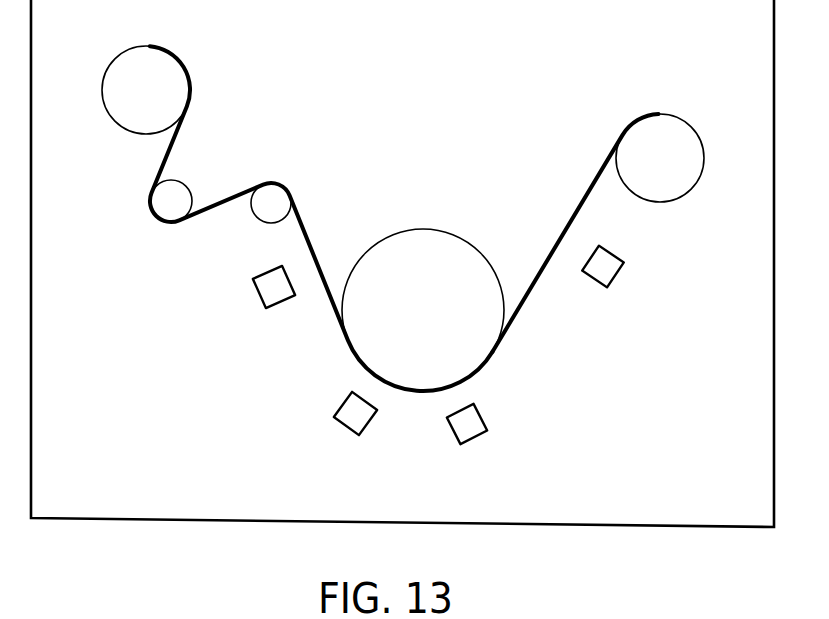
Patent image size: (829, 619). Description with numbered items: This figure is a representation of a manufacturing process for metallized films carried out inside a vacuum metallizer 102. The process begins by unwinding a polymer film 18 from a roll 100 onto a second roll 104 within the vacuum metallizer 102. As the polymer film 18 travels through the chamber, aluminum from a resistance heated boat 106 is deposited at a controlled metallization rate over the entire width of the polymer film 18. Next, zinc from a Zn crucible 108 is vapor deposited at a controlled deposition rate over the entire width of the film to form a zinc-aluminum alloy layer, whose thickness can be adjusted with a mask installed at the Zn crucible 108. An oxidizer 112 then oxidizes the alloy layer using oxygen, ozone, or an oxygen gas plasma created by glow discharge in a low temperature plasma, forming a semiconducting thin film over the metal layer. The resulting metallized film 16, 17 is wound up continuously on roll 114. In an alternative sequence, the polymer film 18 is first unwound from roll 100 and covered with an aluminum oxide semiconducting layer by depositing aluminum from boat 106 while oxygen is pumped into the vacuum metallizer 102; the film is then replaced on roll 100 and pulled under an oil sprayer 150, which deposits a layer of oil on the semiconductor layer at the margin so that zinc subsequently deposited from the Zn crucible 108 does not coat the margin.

The metallized film 16 is at (404, 218).
The metallized film 17 is at (404, 218).
The polymer film 18 is at (577, 208).
The roll 100 is at (673, 131).
The vacuum metallizer 102 is at (647, 528).
The second roll 104 is at (440, 243).
The resistance heated boat 106 is at (491, 418).
The Zn crucible 108 is at (345, 428).
The oxidizer 112 is at (258, 289).
The roll 114 is at (163, 65).
The oil sprayer 150 is at (621, 270).